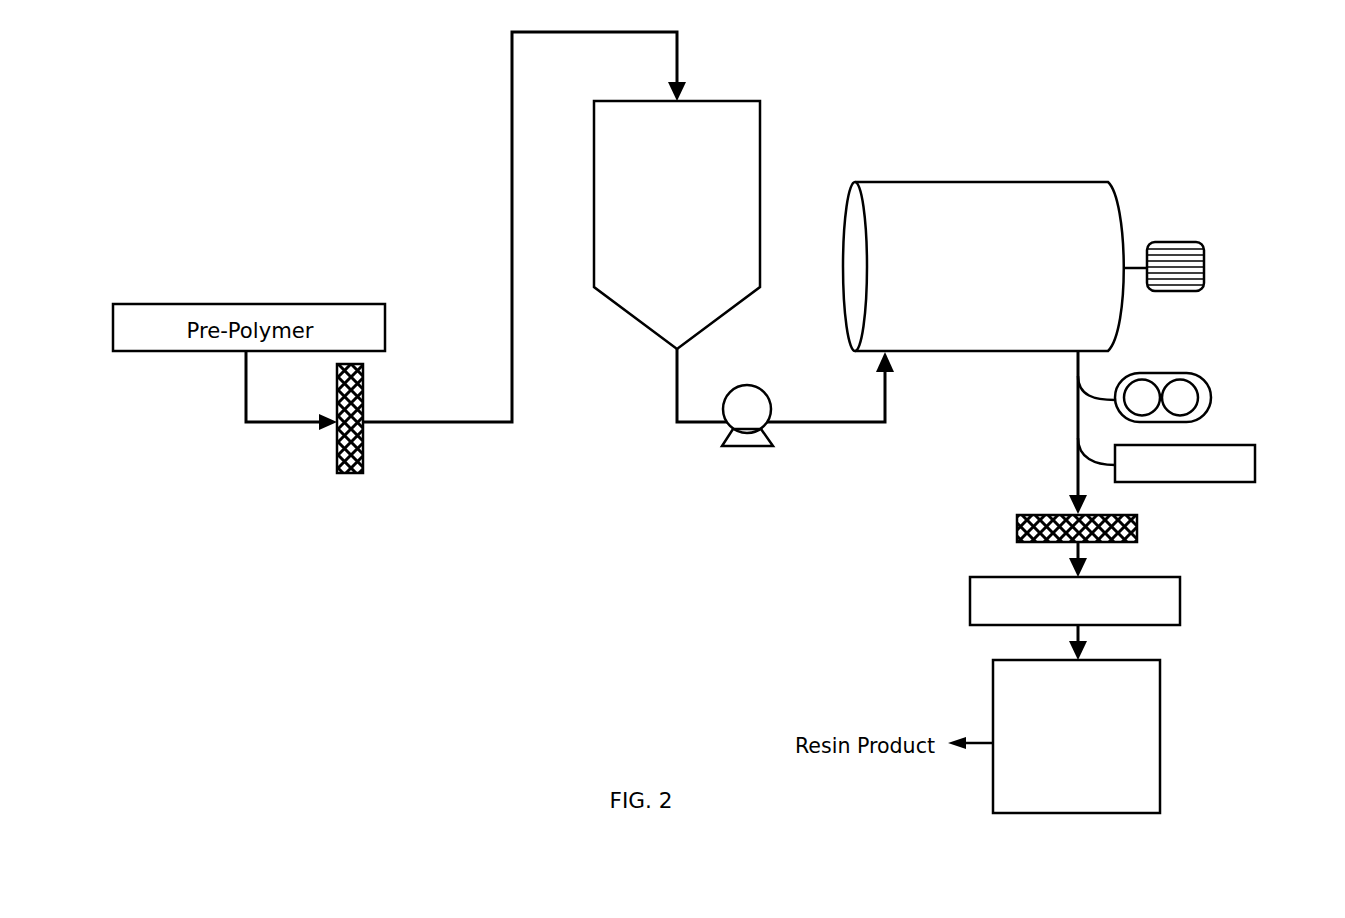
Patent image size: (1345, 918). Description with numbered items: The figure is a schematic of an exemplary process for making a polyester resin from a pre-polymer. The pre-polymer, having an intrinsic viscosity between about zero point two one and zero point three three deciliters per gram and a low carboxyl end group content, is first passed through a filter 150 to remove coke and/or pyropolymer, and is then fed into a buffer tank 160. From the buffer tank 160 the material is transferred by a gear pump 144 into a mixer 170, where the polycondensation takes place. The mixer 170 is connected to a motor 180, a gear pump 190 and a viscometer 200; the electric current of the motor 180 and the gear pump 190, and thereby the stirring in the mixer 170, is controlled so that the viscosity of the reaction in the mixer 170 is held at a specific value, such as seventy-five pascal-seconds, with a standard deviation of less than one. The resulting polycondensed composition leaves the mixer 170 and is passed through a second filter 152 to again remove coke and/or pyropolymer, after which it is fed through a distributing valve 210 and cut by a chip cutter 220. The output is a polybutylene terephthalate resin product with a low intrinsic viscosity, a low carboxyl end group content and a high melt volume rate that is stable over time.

The gear pump 144 is at (743, 455).
The filter 150 is at (337, 462).
The filter 152 is at (1135, 532).
The buffer tank 160 is at (660, 318).
The mixer 170 is at (1030, 202).
The motor 180 is at (1204, 272).
The gear pump 190 is at (1218, 400).
The viscometer 200 is at (1248, 467).
The distributing valve 210 is at (1170, 612).
The chip cutter 220 is at (1145, 725).